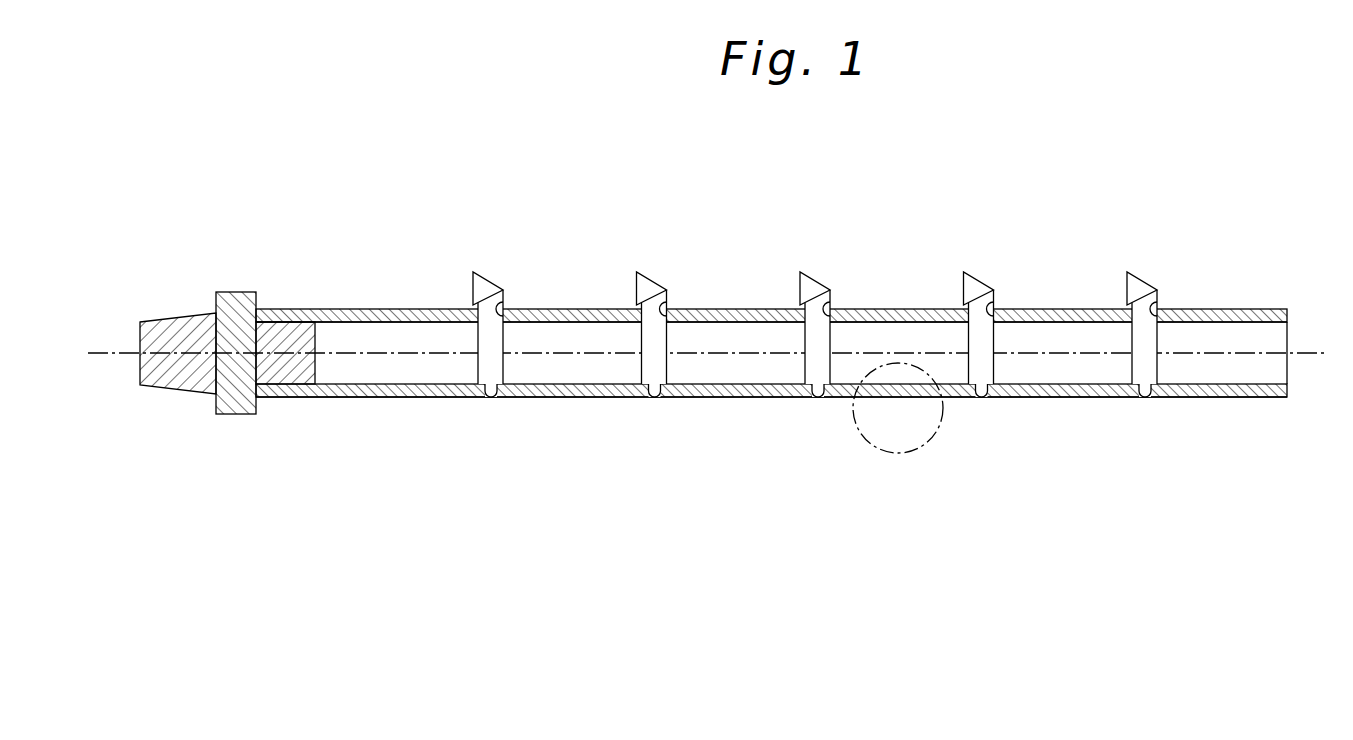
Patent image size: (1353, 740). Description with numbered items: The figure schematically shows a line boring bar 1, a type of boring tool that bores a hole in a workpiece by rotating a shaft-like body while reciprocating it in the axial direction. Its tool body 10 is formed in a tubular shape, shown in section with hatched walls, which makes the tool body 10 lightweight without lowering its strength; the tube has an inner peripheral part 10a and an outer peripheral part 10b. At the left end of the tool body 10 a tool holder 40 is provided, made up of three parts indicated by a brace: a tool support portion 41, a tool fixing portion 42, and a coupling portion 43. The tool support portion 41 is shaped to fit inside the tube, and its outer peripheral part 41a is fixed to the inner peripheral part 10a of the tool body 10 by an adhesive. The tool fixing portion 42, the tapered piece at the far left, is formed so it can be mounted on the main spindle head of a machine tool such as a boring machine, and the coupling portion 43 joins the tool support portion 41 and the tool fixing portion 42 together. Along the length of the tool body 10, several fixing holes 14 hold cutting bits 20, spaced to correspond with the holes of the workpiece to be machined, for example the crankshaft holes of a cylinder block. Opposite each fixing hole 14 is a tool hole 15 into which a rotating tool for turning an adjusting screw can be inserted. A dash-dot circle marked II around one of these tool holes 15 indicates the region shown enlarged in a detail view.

The line boring bar 1 is at (602, 243).
The tool body 10 is at (377, 410).
The inner peripheral part of tool body 10a is at (377, 322).
The outer surface of tube 10b is at (425, 398).
The fixing hole 14 is at (504, 302).
The tool hole 15 is at (491, 398).
The cutting bit 20 is at (493, 256).
The tool holder 40 is at (282, 490).
The tool support portion 41 is at (278, 398).
The outer peripheral part of tool support portion 41a is at (280, 322).
The tool fixing portion 42 is at (175, 391).
The coupling portion 43 is at (233, 406).
The detail view region II is at (898, 454).